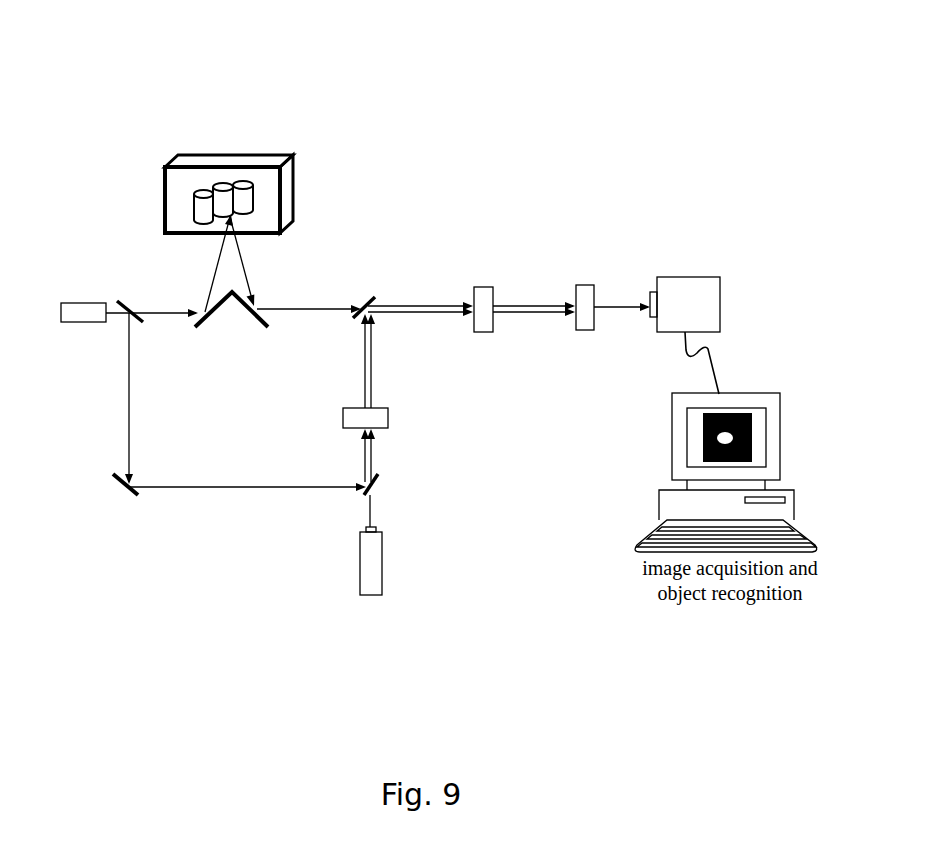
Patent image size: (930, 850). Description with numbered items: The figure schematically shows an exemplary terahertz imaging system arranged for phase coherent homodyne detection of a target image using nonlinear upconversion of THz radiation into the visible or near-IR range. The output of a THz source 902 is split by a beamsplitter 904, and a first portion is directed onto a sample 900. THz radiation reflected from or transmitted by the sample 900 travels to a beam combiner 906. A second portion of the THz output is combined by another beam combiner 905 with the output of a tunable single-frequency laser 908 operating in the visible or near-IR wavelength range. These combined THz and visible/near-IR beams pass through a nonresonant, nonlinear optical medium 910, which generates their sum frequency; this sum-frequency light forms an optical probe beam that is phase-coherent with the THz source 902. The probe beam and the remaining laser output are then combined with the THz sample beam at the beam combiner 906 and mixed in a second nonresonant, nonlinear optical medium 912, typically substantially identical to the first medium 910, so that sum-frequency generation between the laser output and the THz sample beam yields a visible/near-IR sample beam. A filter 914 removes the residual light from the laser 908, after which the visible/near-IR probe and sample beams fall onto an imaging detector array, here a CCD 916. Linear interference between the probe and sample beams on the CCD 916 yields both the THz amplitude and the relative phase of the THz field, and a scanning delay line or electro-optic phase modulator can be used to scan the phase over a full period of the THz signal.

The sample 900 is at (237, 168).
The THz source 902 is at (83, 313).
The beamsplitter 904 is at (128, 303).
The beam combiner 905 is at (376, 478).
The beam combiner 906 is at (365, 303).
The tunable single-frequency laser 908 is at (373, 552).
The nonresonant nonlinear optical medium 910 is at (352, 420).
The second nonresonant nonlinear optical medium 912 is at (484, 298).
The filter 914 is at (586, 317).
The CCD 916 is at (699, 306).